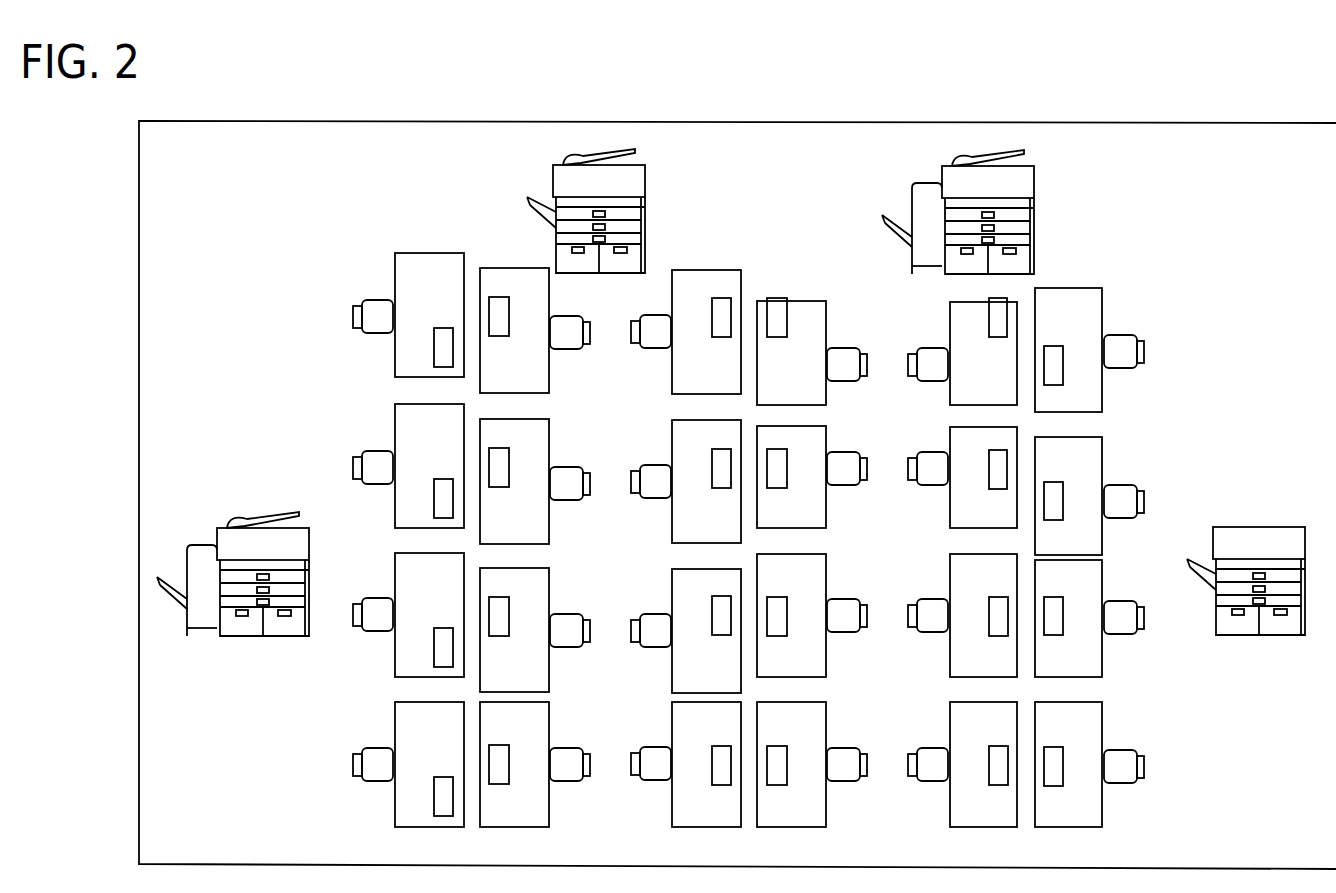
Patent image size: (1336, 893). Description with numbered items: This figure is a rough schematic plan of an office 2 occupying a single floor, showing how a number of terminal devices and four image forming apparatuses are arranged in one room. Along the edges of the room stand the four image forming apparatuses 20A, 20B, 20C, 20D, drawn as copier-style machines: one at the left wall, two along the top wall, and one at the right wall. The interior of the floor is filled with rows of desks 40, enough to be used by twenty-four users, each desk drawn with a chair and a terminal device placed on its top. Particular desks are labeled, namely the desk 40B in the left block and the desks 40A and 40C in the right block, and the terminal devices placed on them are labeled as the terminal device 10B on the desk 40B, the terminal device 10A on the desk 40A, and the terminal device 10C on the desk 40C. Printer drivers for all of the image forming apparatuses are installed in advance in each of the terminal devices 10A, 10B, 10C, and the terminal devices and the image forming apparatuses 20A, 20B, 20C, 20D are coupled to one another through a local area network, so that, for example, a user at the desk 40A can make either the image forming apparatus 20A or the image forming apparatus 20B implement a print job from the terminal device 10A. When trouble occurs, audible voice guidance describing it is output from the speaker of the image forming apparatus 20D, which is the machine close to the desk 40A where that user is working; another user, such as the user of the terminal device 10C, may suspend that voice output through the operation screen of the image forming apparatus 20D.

The office 2 is at (1297, 123).
The image forming apparatus 20A is at (258, 527).
The image forming apparatus 20B is at (645, 180).
The image forming apparatus 20C is at (1032, 181).
The image forming apparatus 20D is at (1258, 527).
The desk 40 is at (1071, 288).
The desk 40A is at (1090, 462).
The desk 40B is at (408, 423).
The desk 40C is at (1092, 575).
The terminal device 10A is at (1052, 507).
The terminal device 10B is at (438, 471).
The terminal device 10C is at (1052, 624).